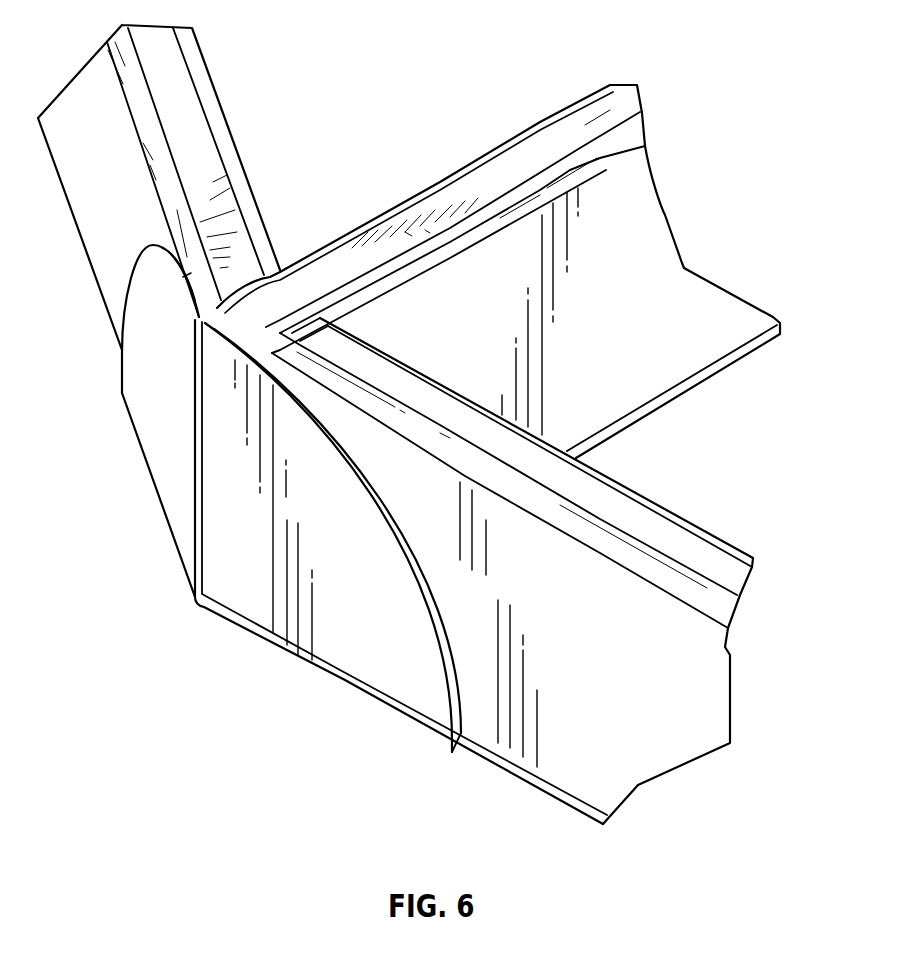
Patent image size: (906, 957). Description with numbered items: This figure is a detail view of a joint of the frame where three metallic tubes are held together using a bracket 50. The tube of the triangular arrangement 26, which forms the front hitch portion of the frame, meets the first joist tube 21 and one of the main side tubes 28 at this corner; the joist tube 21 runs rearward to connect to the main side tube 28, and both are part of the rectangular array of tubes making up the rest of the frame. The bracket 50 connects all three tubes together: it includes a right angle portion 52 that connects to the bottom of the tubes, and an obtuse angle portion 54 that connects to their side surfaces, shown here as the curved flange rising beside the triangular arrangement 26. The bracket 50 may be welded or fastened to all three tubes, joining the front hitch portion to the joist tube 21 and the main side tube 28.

The joist tube 21 is at (645, 223).
The triangular arrangement 26 is at (217, 97).
The main side tube 28 is at (712, 667).
The bracket 50 is at (416, 649).
The right angle portion 52 is at (458, 752).
The obtuse angle portion 54 is at (162, 505).